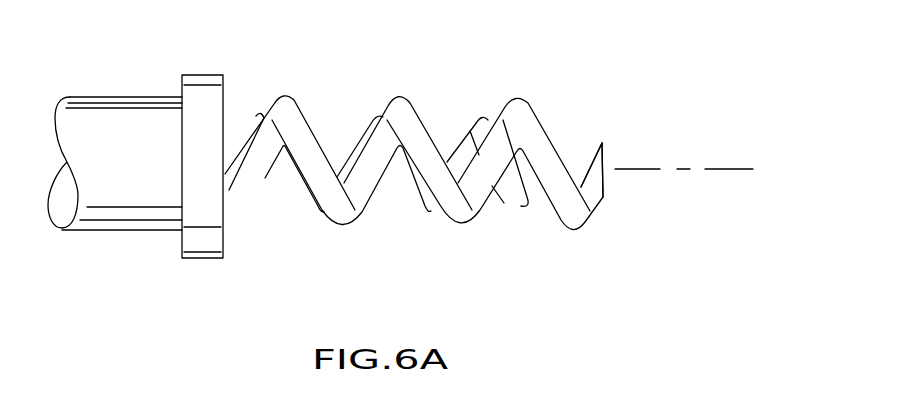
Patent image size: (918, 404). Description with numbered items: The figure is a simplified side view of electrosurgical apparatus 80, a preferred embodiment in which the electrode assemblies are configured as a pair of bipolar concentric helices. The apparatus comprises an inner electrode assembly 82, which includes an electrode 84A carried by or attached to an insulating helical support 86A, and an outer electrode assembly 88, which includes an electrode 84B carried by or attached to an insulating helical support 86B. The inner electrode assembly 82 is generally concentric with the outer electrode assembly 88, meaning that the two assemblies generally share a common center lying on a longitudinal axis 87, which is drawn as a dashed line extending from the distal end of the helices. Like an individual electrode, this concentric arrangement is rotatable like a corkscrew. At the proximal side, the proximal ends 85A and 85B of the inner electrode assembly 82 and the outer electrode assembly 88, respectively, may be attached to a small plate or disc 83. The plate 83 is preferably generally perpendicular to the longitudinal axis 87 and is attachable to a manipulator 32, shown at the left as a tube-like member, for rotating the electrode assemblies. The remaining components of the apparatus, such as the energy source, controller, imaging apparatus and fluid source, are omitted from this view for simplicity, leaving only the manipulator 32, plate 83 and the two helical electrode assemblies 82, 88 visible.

The electrosurgical apparatus 80 is at (647, 78).
The manipulator 32 is at (115, 117).
The plate 83 is at (190, 238).
The inner electrode assembly 82 is at (505, 205).
The proximal end of inner electrode assembly 85A is at (243, 145).
The proximal end of outer electrode assembly 85B is at (233, 230).
The outer electrode assembly 88 is at (427, 110).
The insulating helical support 86A is at (517, 200).
The insulating helical support 86B is at (452, 212).
The electrode 84A is at (556, 165).
The electrode 84B is at (595, 183).
The longitudinal axis 87 is at (713, 172).